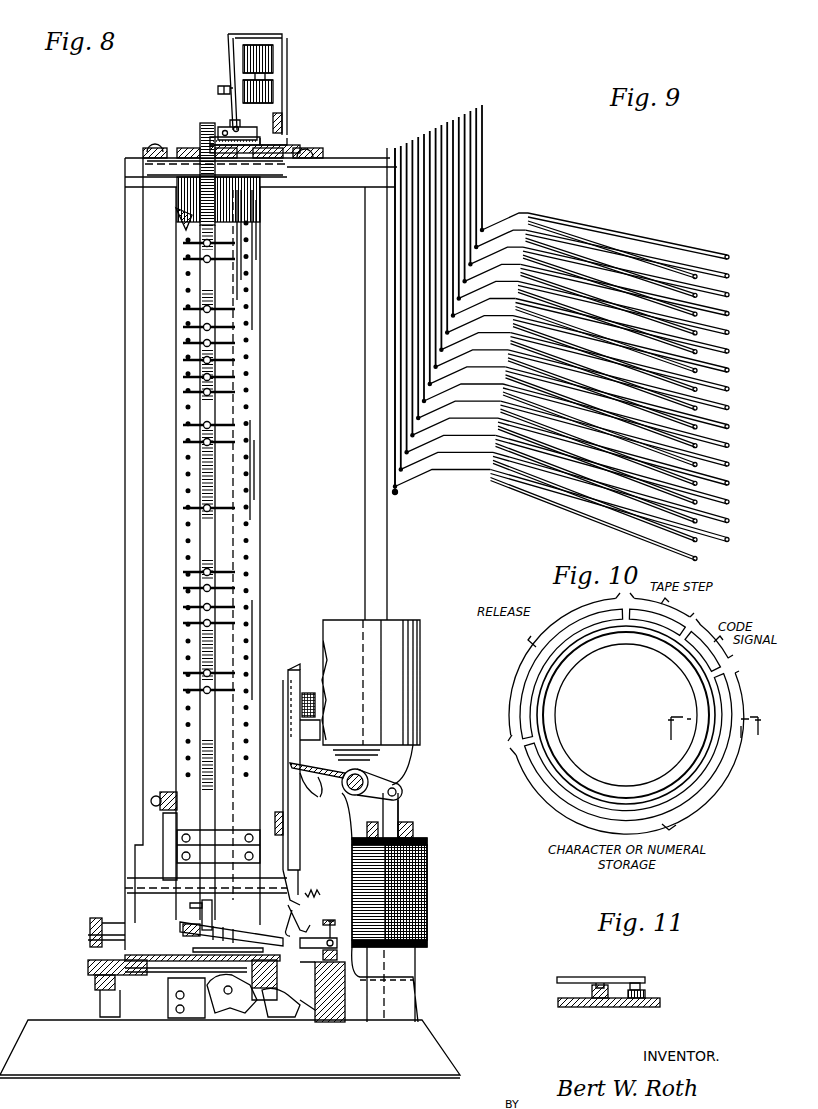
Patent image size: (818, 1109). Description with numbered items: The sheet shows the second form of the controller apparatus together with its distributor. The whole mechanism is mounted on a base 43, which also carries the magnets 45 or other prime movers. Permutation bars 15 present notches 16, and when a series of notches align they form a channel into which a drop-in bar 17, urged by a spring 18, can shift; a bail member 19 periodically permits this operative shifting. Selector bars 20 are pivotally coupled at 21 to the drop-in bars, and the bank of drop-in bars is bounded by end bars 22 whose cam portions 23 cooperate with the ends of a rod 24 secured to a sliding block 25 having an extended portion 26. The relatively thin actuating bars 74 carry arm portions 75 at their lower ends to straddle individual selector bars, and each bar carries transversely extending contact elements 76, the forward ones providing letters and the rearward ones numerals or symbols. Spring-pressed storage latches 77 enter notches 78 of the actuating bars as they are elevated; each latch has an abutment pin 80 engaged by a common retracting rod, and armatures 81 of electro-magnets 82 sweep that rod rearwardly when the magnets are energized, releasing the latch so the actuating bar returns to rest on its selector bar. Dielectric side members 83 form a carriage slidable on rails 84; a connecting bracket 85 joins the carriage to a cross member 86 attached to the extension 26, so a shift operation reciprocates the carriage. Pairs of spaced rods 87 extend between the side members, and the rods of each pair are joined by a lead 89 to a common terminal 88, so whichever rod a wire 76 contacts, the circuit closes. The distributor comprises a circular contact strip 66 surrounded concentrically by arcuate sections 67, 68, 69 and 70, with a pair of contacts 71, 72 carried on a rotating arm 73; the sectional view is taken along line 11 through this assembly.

In FIG. 8, the electro-magnet 82 is at (263, 43).
In FIG. 8, the armature 81 is at (230, 60).
In FIG. 8, the abutment pin 80 is at (233, 128).
In FIG. 8, the storage latch 77 is at (250, 135).
In FIG. 8, the notch 78 is at (203, 138).
In FIG. 8, the rail 84 is at (127, 882).
In FIG. 8, the side member 83 is at (248, 210).
In FIG. 8, the contact element 76 is at (177, 388).
In FIG. 8, the switch element rod 87 is at (250, 488).
In FIG. 9, the switch element rod 87 is at (672, 258).
In FIG. 8, the actuating bar 74 is at (210, 517).
In FIG. 8, the drop-in bar 17 is at (298, 660).
In FIG. 8, the notch 16 is at (288, 680).
In FIG. 8, the permutation bar 15 is at (307, 695).
In FIG. 8, the magnet 45 is at (413, 678).
In FIG. 8, the bail member 19 is at (313, 795).
In FIG. 8, the connecting bracket 85 is at (160, 830).
In FIG. 8, the end bar 22 is at (275, 868).
In FIG. 8, the spring 18 is at (310, 898).
In FIG. 8, the pivot 21 is at (300, 925).
In FIG. 8, the selector bar 20 is at (250, 920).
In FIG. 8, the arm portion 75 is at (212, 912).
In FIG. 8, the block 25 is at (300, 950).
In FIG. 8, the extended portion 26 is at (170, 958).
In FIG. 8, the cross member 86 is at (90, 933).
In FIG. 8, the base 43 is at (230, 1049).
In FIG. 8, the cam portion 23 is at (280, 1010).
In FIG. 8, the rod 24 is at (270, 1000).
In FIG. 9, the common terminal 88 is at (490, 135).
In FIG. 9, the lead 89 is at (505, 210).
In FIG. 10, the arcuate section 70 is at (542, 655).
In FIG. 10, the arcuate section 67 is at (652, 617).
In FIG. 10, the arcuate section 68 is at (703, 652).
In FIG. 10, the circular contact strip 66 is at (567, 758).
In FIG. 11, the circular contact strip 66 is at (596, 1008).
In FIG. 10, the arcuate section 69 is at (537, 753).
In FIG. 11, the arcuate section 69 is at (645, 994).
In FIG. 10, the section line 11- 11 is at (705, 728).
In FIG. 11, the rotating arm 73 is at (582, 978).
In FIG. 11, the contact 71 is at (603, 983).
In FIG. 11, the contact 72 is at (640, 985).